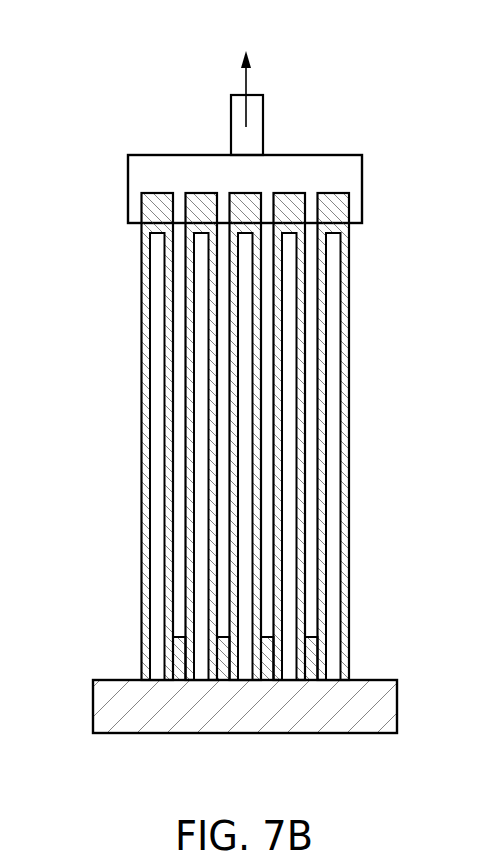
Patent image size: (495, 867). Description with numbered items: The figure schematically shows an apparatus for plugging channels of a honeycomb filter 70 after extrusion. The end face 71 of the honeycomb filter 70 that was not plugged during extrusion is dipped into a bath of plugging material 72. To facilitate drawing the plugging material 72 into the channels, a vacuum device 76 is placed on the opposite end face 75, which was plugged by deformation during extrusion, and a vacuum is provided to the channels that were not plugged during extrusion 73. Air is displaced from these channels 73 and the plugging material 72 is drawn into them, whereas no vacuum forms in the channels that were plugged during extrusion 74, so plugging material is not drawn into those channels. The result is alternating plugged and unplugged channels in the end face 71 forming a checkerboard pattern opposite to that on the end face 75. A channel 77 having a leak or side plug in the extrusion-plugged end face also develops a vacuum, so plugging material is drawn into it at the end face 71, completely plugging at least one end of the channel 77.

The honeycomb filter 70 is at (240, 415).
The end face 71 is at (178, 681).
The plugging material 72 is at (102, 705).
The channels that were not plugged during extrusion 73 is at (180, 656).
The channels that were plugged during extrusion 74 is at (244, 381).
The end face 75 is at (200, 381).
The vacuum device 76 is at (363, 190).
The channel 77 is at (292, 233).